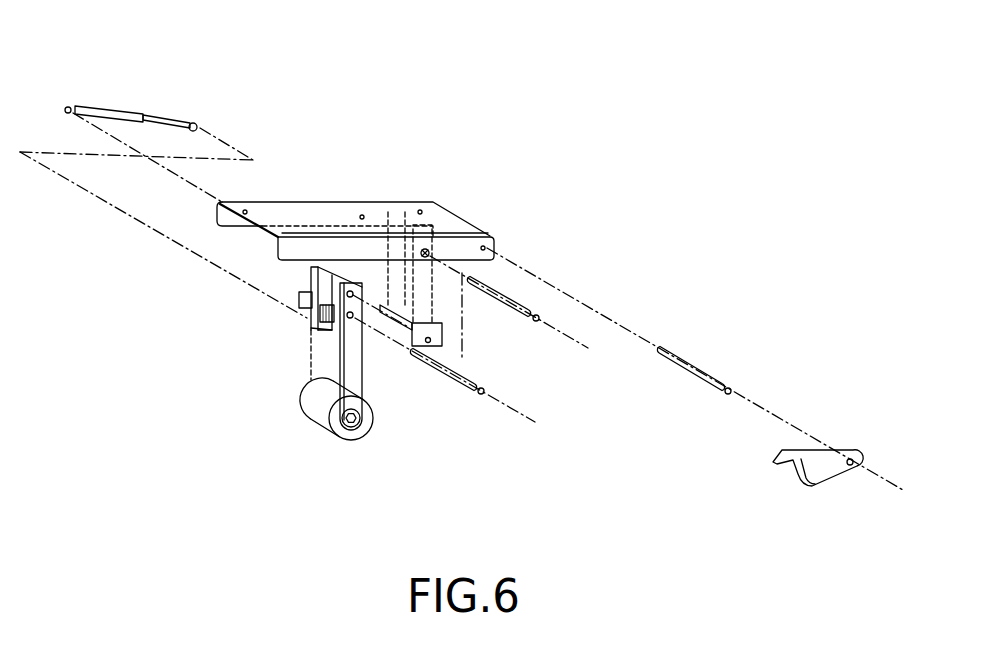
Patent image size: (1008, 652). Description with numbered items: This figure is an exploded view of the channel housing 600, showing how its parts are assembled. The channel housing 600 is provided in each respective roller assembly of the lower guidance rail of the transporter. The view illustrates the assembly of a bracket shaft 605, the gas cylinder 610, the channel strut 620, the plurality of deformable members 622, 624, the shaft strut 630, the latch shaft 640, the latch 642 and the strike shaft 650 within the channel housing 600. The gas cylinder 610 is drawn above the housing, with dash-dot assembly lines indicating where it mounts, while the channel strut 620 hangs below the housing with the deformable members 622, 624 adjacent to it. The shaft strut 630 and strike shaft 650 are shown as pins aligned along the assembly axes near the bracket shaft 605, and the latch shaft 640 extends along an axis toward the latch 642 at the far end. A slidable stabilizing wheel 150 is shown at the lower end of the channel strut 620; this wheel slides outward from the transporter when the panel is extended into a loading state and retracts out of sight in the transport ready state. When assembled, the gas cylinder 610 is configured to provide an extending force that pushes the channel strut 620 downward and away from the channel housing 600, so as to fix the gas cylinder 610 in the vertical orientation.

The slidable stabilizing wheel 150 is at (320, 426).
The channel housing 600 is at (375, 202).
The bracket shaft 605 is at (433, 313).
The gas cylinder 610 is at (110, 108).
The channel strut 620 is at (311, 328).
The deformable member 622 is at (298, 298).
The deformable member 624 is at (333, 316).
The shaft strut 630 is at (507, 298).
The latch shaft 640 is at (697, 362).
The latch 642 is at (813, 447).
The strike shaft 650 is at (445, 377).